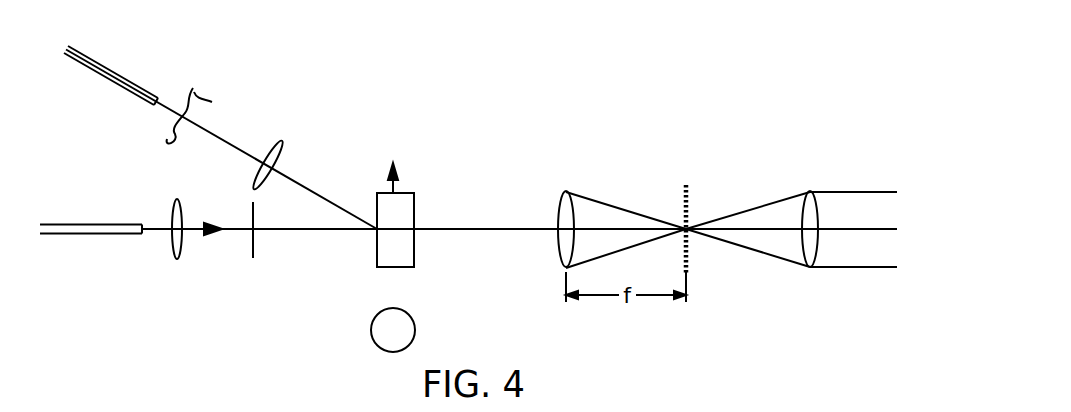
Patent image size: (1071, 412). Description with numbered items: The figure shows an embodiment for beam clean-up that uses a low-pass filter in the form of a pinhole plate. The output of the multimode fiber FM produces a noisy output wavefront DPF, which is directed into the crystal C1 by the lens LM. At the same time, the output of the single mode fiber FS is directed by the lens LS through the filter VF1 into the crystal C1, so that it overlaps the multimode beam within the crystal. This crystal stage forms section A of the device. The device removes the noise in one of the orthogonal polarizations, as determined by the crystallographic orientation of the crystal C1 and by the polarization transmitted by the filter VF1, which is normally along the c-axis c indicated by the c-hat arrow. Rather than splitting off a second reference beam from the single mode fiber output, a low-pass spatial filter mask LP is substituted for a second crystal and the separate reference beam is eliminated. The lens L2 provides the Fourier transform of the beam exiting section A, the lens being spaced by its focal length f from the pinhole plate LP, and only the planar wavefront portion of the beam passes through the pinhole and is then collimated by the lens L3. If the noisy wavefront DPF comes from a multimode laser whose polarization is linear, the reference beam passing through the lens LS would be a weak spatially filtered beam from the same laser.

The single mode fiber FS is at (91, 214).
The lens LS is at (174, 251).
The filter VF1 is at (255, 245).
The multimode fiber FM is at (111, 73).
The noisy output wavefront DPF is at (193, 88).
The lens LM is at (292, 123).
The crystal C1 is at (395, 248).
The c-axis c is at (393, 163).
The section A is at (393, 330).
The focal length f is at (466, 245).
The lens L2 is at (559, 259).
The low-pass spatial filter mask LP is at (693, 191).
The lens L3 is at (802, 260).